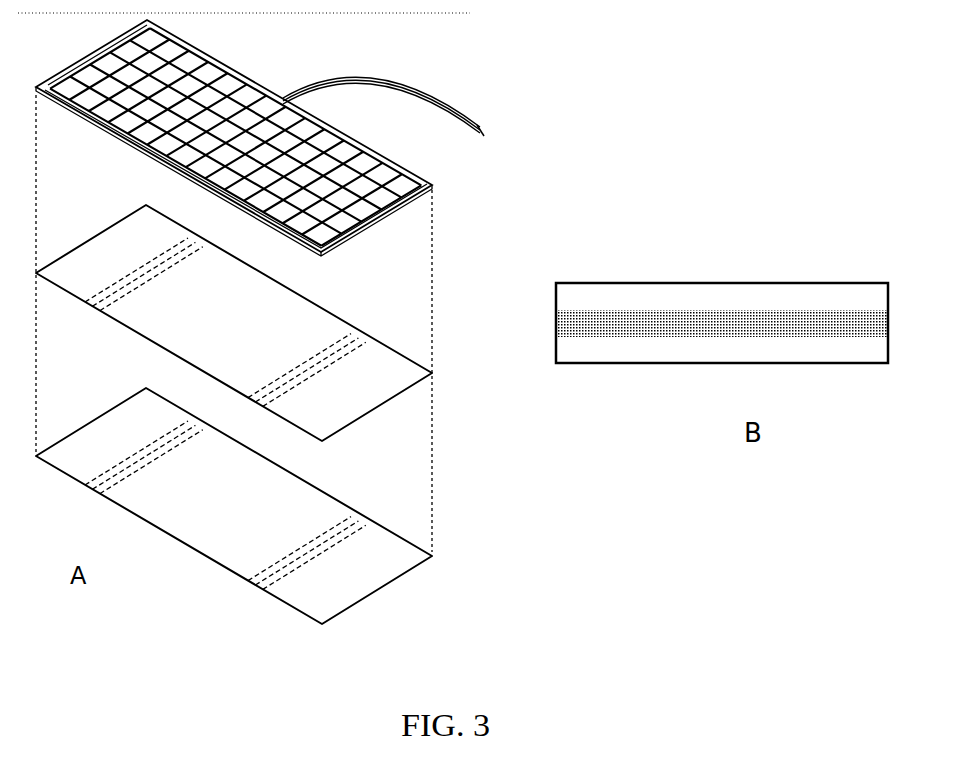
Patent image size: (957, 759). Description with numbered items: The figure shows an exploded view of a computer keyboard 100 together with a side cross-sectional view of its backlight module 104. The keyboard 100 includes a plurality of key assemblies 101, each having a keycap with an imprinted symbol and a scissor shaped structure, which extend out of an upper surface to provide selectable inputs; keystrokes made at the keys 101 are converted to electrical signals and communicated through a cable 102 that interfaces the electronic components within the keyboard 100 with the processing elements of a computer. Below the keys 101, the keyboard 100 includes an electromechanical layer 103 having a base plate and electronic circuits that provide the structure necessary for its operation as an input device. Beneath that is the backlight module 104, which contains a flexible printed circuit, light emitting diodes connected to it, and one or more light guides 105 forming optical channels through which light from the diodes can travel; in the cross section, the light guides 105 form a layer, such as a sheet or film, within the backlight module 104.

The keyboard 100 is at (260, 138).
The key assemblies 101 is at (321, 150).
The cable 102 is at (365, 82).
The electromechanical layer 103 is at (92, 237).
The backlight module 104 is at (92, 424).
The light guides 105 is at (642, 322).